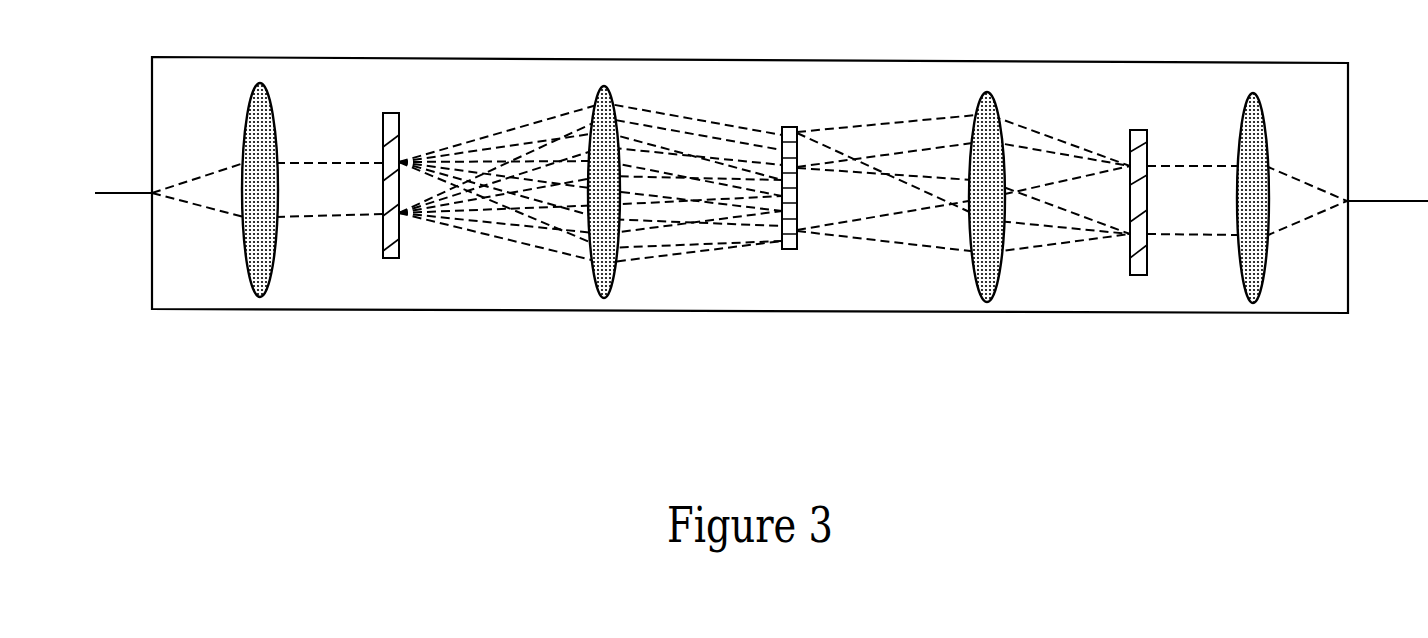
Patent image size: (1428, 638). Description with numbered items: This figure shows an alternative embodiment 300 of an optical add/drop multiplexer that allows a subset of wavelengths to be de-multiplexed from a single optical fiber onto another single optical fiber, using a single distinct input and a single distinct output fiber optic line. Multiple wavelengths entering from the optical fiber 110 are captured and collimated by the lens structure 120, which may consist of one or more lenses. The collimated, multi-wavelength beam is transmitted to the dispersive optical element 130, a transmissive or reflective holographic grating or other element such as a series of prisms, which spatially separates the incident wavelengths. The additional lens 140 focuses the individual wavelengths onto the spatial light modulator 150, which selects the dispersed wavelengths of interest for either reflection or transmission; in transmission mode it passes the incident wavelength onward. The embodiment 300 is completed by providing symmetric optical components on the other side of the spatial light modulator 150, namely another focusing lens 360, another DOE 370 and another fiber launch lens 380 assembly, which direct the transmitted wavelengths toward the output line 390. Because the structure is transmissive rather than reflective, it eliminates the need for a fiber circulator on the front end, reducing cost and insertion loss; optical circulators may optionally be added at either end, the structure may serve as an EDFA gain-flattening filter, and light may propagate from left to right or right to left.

The alternative embodiment of the OADM 300 is at (750, 169).
The optical fiber 110 is at (165, 254).
The lens structure 120 is at (305, 213).
The dispersive optical element 130 is at (386, 228).
The lens 140 is at (590, 214).
The spatial light modulator 150 is at (788, 235).
The focusing lens 360 is at (963, 217).
The DOE 370 is at (1131, 236).
The fiber launch lens assembly 380 is at (1247, 218).
The output light 390 is at (1387, 275).